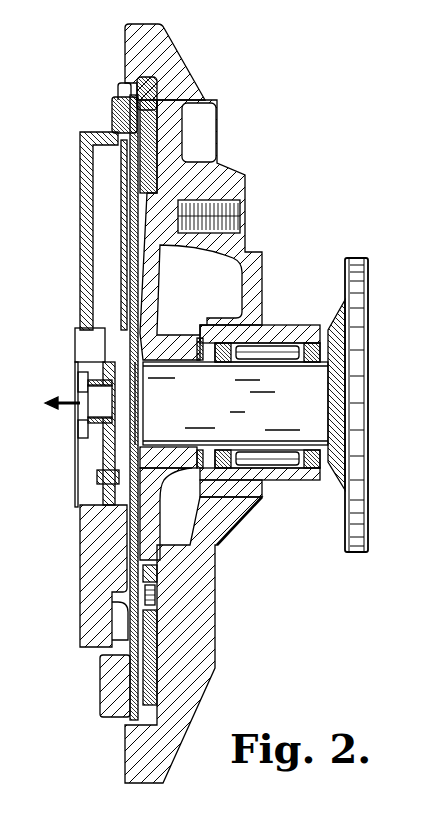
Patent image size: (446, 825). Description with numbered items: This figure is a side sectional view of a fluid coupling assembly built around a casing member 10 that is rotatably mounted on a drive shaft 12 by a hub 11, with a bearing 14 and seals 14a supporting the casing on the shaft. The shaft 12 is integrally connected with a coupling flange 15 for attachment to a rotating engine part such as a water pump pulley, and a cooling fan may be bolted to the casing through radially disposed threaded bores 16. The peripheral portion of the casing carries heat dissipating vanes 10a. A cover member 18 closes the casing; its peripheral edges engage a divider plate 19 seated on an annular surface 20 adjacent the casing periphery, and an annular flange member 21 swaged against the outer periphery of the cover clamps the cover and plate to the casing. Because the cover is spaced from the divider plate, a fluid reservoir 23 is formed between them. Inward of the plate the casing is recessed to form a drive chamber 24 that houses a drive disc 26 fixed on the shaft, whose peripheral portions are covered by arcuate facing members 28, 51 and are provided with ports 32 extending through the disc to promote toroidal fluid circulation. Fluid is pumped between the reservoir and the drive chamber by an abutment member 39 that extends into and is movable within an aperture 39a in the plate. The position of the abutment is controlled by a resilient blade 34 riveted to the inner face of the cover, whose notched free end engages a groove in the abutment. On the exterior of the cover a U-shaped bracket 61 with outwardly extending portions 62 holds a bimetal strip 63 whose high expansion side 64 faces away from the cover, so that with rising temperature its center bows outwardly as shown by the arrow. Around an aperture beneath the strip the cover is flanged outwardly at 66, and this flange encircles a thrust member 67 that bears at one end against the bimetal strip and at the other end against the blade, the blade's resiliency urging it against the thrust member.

The casing member 10 is at (253, 268).
The heat dissipating vanes 10a is at (163, 45).
The hub 11 is at (292, 328).
The drive shaft 12 is at (229, 398).
The bearing 14 is at (242, 358).
The seals 14a is at (195, 342).
The coupling flange 15 is at (358, 263).
The threaded bores 16 is at (242, 210).
The cover member 18 is at (82, 133).
The divider plate 19 is at (130, 258).
The annular surface 20 is at (140, 75).
The annular flange member 21 is at (120, 90).
The fluid reservoir 23 is at (118, 615).
The drive chamber 24 is at (130, 598).
The drive disc 26 is at (153, 568).
The arcuate facing members 28 is at (138, 163).
The ports 32 is at (160, 213).
The blade 34 is at (118, 276).
The abutment member 39 is at (117, 117).
The aperture 39a is at (200, 108).
The arcuate facing members 51 is at (157, 148).
The U-shaped bracket 61 is at (75, 333).
The outwardly extending portions 62 is at (83, 467).
The bimetal strip 63 is at (75, 427).
The high expansion side 64 is at (75, 380).
The outwardly flanged portion 66 is at (98, 452).
The thrust member 67 is at (109, 410).